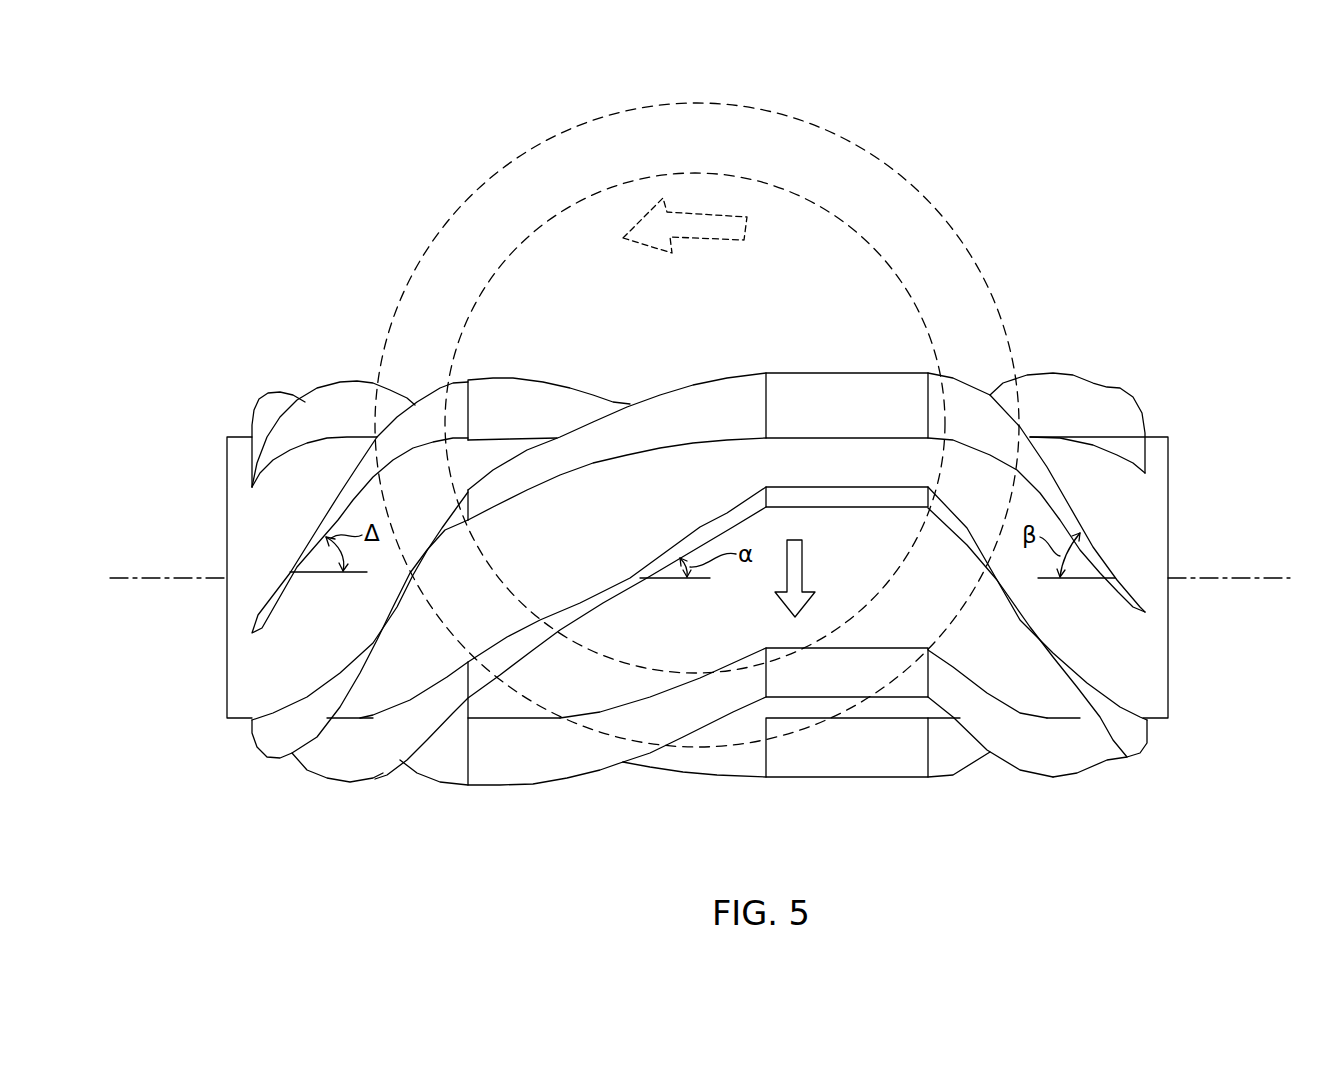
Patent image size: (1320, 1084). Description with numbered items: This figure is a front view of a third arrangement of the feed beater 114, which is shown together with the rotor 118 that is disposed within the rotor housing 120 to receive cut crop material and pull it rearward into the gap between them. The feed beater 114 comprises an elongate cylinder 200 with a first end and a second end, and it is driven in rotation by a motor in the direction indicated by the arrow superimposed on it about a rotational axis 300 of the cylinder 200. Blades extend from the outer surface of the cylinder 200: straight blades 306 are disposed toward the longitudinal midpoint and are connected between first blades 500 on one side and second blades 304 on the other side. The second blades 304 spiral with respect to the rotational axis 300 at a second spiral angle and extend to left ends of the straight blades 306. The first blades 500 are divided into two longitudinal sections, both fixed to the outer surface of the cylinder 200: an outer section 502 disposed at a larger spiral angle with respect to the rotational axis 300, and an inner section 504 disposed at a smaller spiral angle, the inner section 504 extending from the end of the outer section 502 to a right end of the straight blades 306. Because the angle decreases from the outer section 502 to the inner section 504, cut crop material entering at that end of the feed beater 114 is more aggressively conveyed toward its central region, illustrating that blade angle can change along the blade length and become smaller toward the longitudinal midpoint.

The feed beater 114 is at (1067, 190).
The rotor 118 is at (832, 205).
The rotor housing 120 is at (935, 200).
The cylinder 200 is at (227, 528).
The rotational axis 300 is at (1236, 575).
The second blades 304 is at (1068, 372).
The straight blades 306 is at (835, 372).
The first blades 500 is at (698, 376).
The outer section 502 is at (350, 378).
The inner section 504 is at (542, 380).